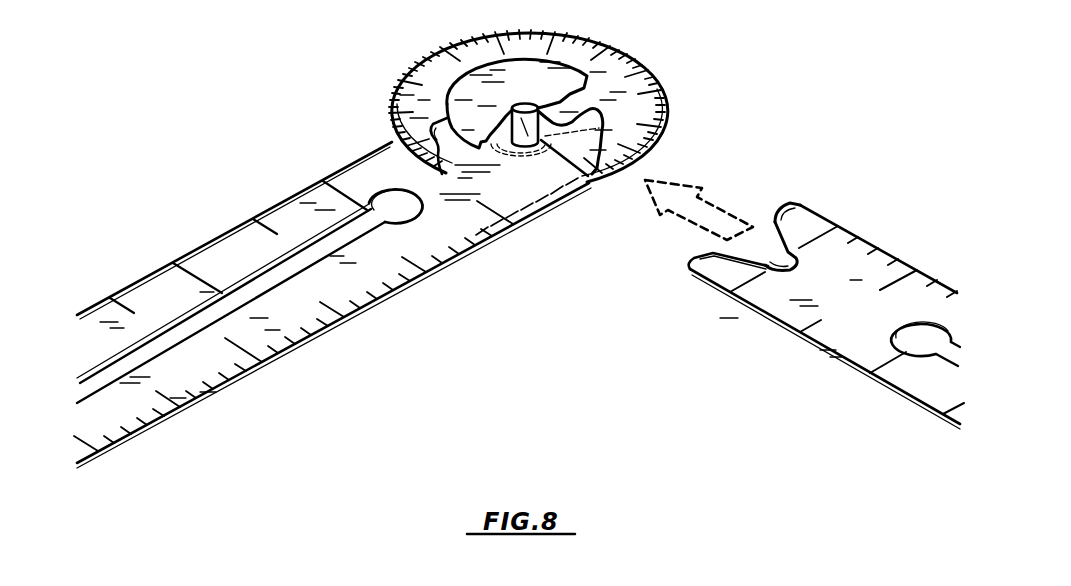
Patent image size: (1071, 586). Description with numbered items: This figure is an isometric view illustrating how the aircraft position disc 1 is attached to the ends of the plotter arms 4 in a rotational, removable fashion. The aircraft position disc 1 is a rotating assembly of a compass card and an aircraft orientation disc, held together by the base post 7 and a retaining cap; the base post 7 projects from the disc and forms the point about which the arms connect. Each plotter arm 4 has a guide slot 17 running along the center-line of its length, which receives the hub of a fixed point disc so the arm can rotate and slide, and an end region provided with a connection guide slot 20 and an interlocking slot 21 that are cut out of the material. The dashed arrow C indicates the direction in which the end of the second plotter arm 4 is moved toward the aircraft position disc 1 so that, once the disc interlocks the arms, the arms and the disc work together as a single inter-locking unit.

The aircraft position disc 1 is at (389, 117).
The plotter arm 4 is at (410, 281).
The base post 7 is at (534, 143).
The guide slot 17 is at (280, 258).
The connection guide slot 20 is at (777, 247).
The interlocking slot 21 is at (800, 267).
The insertion direction arrow C is at (683, 212).